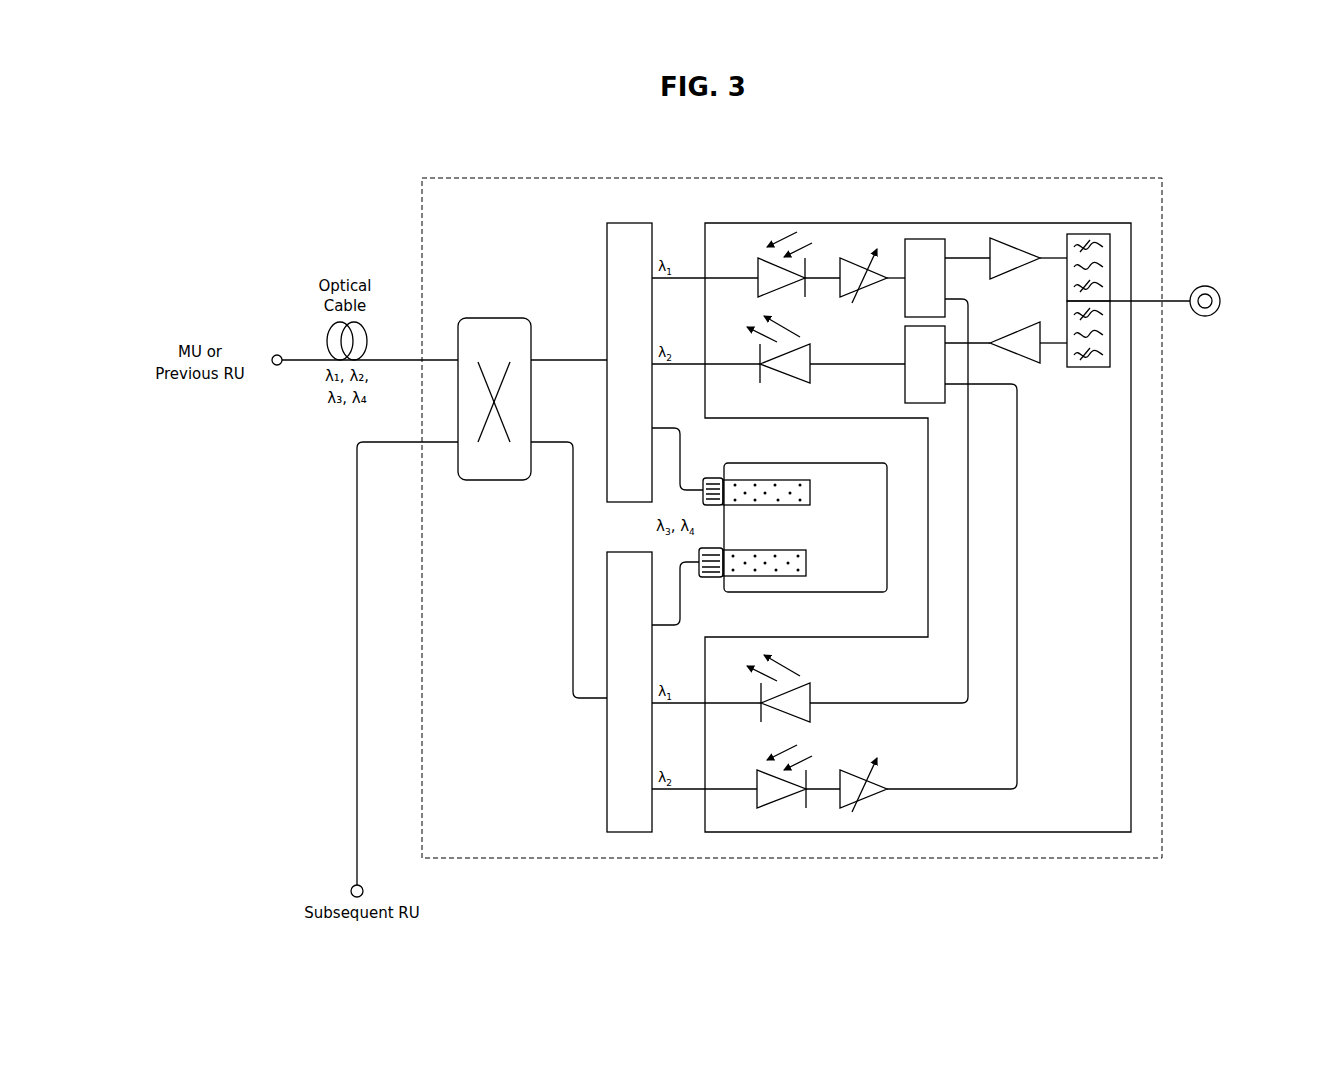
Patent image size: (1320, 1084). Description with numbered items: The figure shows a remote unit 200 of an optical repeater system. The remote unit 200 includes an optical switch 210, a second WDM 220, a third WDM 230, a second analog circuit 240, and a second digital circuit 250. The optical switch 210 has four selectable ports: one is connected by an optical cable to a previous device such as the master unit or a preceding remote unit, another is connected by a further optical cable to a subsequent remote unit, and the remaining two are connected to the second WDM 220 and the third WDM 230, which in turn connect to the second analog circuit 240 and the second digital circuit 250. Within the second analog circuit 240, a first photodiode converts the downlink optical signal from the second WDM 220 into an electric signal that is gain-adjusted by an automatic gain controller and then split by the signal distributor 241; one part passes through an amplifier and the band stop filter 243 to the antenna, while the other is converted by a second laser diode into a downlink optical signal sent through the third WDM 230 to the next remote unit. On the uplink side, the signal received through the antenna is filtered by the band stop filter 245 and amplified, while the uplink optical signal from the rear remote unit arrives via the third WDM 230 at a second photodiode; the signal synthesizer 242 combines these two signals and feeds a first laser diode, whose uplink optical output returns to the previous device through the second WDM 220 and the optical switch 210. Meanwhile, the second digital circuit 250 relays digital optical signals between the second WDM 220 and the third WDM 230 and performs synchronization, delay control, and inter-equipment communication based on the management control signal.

The remote unit 200 is at (1047, 178).
The optical switch 210 is at (493, 480).
The second WDM 220 is at (607, 245).
The third WDM 230 is at (607, 762).
The second analog circuit 240 is at (1131, 532).
The signal distributor 241 is at (925, 239).
The signal synthesizer 242 is at (905, 384).
The band stop filter 243 is at (1110, 264).
The band stop filter 245 is at (1110, 333).
The second digital circuit 250 is at (785, 592).